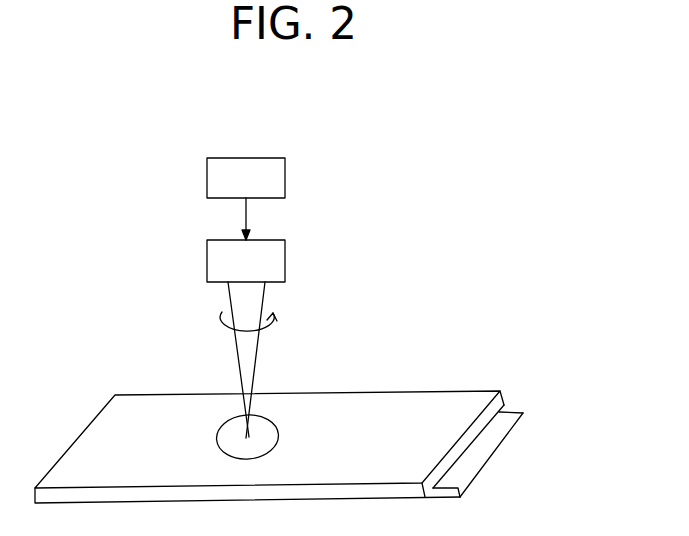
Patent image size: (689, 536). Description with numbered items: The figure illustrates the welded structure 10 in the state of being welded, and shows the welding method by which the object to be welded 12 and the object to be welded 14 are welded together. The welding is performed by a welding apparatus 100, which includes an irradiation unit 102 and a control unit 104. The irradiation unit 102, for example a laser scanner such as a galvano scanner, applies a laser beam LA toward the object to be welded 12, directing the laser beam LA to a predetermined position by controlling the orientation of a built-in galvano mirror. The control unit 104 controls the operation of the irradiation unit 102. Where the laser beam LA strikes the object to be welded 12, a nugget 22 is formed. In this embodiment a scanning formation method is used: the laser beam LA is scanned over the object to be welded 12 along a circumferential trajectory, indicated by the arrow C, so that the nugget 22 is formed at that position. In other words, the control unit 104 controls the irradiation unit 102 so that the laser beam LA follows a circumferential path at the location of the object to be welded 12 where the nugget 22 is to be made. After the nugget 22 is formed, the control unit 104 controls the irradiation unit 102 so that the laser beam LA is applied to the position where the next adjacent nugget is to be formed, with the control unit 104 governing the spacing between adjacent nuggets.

The welding apparatus 100 is at (251, 193).
The control unit 104 is at (210, 180).
The irradiation unit 102 is at (210, 263).
The laser beam LA is at (230, 303).
The arrow indicating circumferential trajectory C is at (262, 331).
The welded structure 10 is at (308, 379).
The object to be welded 12 is at (269, 407).
The nugget 22 is at (272, 433).
The object to be welded 14 is at (488, 468).